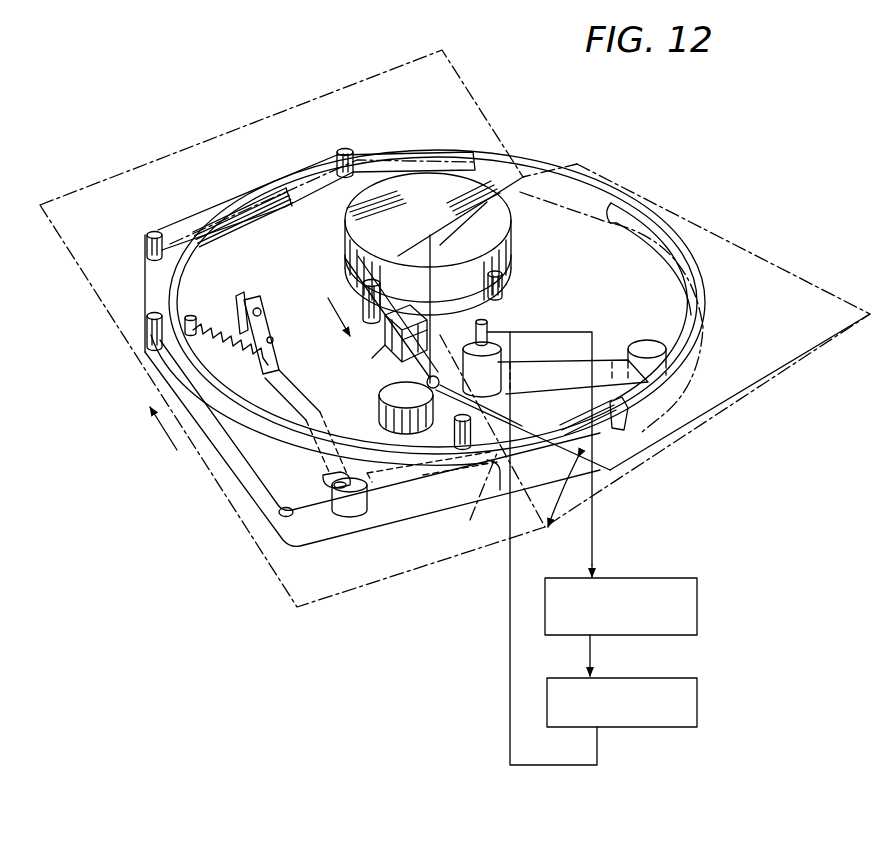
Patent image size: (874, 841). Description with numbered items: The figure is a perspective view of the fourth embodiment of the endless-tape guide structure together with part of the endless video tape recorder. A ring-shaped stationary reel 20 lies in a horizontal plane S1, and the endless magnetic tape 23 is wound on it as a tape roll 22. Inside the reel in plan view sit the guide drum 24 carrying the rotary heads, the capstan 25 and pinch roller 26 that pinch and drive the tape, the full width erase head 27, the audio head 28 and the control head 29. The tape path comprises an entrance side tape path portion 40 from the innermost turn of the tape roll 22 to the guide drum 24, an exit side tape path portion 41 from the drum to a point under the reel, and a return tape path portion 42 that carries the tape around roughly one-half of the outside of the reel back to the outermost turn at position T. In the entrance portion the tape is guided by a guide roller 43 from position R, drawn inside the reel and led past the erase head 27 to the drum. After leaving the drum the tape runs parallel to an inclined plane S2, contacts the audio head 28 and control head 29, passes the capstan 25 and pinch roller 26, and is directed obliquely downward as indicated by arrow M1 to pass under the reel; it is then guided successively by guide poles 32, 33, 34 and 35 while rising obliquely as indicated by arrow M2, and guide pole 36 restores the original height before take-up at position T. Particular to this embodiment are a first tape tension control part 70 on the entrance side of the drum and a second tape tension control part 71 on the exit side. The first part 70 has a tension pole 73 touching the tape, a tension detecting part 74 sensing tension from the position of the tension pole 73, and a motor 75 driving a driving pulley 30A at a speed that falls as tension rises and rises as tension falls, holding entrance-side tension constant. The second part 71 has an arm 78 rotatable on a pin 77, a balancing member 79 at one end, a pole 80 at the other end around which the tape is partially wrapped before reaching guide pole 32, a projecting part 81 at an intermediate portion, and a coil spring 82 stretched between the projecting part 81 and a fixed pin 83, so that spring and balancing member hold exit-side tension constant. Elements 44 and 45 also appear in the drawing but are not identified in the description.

The stationary reel 20 is at (677, 233).
The tape roll 22 is at (218, 232).
The endless magnetic tape 23 is at (612, 360).
The guide drum 24 is at (366, 214).
The capstan 25 is at (436, 378).
The pinch roller 26 is at (397, 395).
The full width erase head 27 is at (500, 286).
The audio head 28 is at (402, 320).
The control head 29 is at (410, 355).
The driving pulley 30A is at (495, 401).
The guide pole 32 is at (469, 501).
The guide pole 33 is at (300, 482).
The guide pole 34 is at (152, 318).
The guide pole 35 is at (155, 232).
The guide pole 36 is at (347, 150).
The entrance side tape path portion 40 is at (557, 360).
The exit side tape path portion 41 is at (372, 358).
The return tape path portion 42 is at (247, 487).
The guide roller 43 is at (640, 340).
The guide 44 is at (490, 330).
The guide post 45 is at (358, 272).
The first tape tension control part 70 is at (548, 325).
The second tape tension control part 71 is at (272, 293).
The tension pole 73 is at (486, 330).
The tension detecting part 74 is at (655, 578).
The motor 75 is at (697, 690).
The pin 77 is at (273, 338).
The arm 78 is at (283, 372).
The balancing member 79 is at (257, 295).
The pole 80 is at (364, 492).
The projecting part 81 is at (288, 385).
The coil spring 82 is at (223, 345).
The fixed pin 83 is at (205, 316).
The position T is at (473, 167).
The position R is at (665, 357).
The horizontal plane S1 is at (707, 345).
The inclined plane S2 is at (308, 328).
The arrow M1 is at (462, 363).
The arrow M2 is at (173, 473).